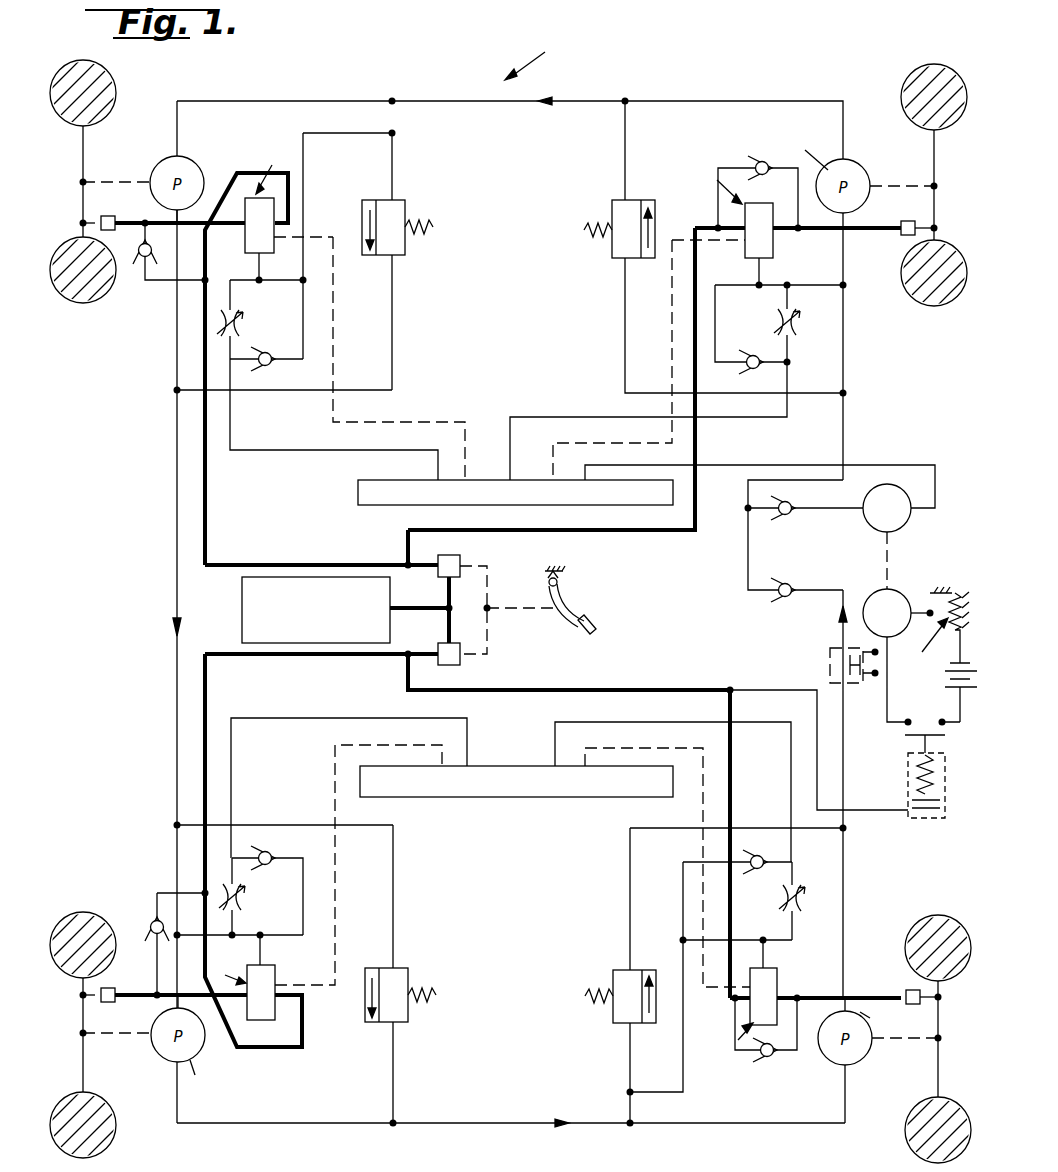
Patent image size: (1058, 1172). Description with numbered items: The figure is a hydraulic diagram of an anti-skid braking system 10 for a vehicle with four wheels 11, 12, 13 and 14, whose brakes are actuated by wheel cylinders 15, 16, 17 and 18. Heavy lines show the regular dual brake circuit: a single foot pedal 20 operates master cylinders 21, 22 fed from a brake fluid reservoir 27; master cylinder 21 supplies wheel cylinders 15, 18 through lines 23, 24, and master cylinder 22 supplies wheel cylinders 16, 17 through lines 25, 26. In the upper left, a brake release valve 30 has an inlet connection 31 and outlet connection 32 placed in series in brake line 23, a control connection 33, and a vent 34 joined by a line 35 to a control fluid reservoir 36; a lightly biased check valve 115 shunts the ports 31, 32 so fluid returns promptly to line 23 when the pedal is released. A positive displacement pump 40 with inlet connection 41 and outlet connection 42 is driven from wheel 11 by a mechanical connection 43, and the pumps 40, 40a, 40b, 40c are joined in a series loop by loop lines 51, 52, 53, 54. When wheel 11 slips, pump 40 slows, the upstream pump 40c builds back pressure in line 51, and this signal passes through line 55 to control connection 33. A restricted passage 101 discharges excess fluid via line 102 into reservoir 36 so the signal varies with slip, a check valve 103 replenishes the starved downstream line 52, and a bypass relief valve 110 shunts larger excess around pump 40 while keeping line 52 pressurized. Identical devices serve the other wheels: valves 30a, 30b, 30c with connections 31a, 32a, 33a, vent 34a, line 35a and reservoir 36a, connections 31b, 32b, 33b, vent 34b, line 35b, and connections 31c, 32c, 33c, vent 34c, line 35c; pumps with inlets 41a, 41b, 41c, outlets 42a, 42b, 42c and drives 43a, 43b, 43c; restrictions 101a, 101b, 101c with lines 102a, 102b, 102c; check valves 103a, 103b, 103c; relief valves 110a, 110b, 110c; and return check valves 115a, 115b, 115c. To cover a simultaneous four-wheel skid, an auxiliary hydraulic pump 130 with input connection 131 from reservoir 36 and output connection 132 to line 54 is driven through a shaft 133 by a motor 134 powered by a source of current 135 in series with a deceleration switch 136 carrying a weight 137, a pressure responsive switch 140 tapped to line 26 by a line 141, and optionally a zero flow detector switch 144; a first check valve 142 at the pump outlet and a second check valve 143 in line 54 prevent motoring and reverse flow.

The anti-skid braking system 10 is at (535, 58).
The wheel 11 is at (108, 85).
The wheel 12 is at (102, 915).
The wheel 13 is at (945, 915).
The wheel 14 is at (938, 66).
The wheel cylinder 15 is at (112, 217).
The wheel cylinder 16 is at (115, 988).
The wheel cylinder 17 is at (910, 990).
The wheel cylinder 18 is at (908, 221).
The foot pedal 20 is at (563, 583).
The master cylinder 21 is at (462, 562).
The master cylinder 22 is at (458, 668).
The brake line 23 is at (262, 567).
The brake line 24 is at (646, 530).
The brake line 25 is at (245, 656).
The brake line 26 is at (630, 690).
The brake fluid reservoir 27 is at (242, 615).
The brake release valve 30 is at (246, 355).
The inlet connection 31 is at (290, 236).
The outlet connection 32 is at (228, 236).
The control connection 33 is at (252, 270).
The vent 34 is at (262, 282).
The line 35 is at (333, 304).
The control fluid reservoir 36 is at (482, 480).
The pump 40 is at (186, 158).
The inlet connection 41 is at (172, 158).
The outlet connection 42 is at (165, 220).
The mechanical connection 43 is at (115, 181).
The loop line 51 is at (447, 106).
The loop line 52 is at (177, 572).
The loop line 53 is at (448, 1125).
The loop line 54 is at (843, 420).
The line 55 is at (338, 138).
The restricted passage 101 is at (238, 322).
The line 102 is at (272, 446).
The check valve 103 is at (271, 366).
The bypass relief valve 110 is at (405, 252).
The check valve 115 is at (140, 266).
The brake release valve 30a is at (251, 850).
The inlet connection 31a is at (302, 1012).
The outlet connection 32a is at (237, 1005).
The control connection 33a is at (262, 940).
The vent 34a is at (282, 976).
The line 35a is at (337, 895).
The control fluid reservoir 36a is at (500, 798).
The pump 40a is at (165, 1062).
The inlet connection 41a is at (163, 1018).
The outlet connection 42a is at (181, 1062).
The mechanical connection 43a is at (112, 1036).
The restricted passage 101a is at (240, 900).
The line 102a is at (340, 718).
The check valve 103a is at (267, 852).
The bypass relief valve 110a is at (410, 968).
The check valve 115a is at (157, 915).
The brake release valve 30b is at (738, 1040).
The inlet connection 31b is at (746, 1010).
The outlet connection 32b is at (812, 998).
The control connection 33b is at (767, 963).
The vent 34b is at (733, 998).
The line 35b is at (703, 845).
The pump 40b is at (832, 1055).
The inlet connection 41b is at (846, 1065).
The outlet connection 42b is at (850, 1012).
The mechanical connection 43b is at (903, 1040).
The restricted passage 101b is at (795, 892).
The line 102b is at (745, 722).
The check valve 103b is at (770, 858).
The bypass relief valve 110b is at (613, 1010).
The check valve 115b is at (762, 1060).
The brake release valve 30c is at (714, 182).
The inlet connection 31c is at (712, 226).
The outlet connection 32c is at (783, 229).
The control connection 33c is at (764, 278).
The vent 34c is at (740, 245).
The line 35c is at (672, 300).
The pump 40c is at (852, 160).
The inlet connection 41c is at (847, 222).
The outlet connection 42c is at (825, 165).
The mechanical connection 43c is at (898, 186).
The restricted passage 101c is at (780, 322).
The line 102c is at (598, 416).
The check valve 103c is at (745, 368).
The bypass relief valve 110c is at (612, 254).
The check valve 115c is at (760, 160).
The auxiliary hydraulic pump 130 is at (905, 526).
The input connection 131 is at (925, 465).
The output connection 132 is at (838, 520).
The shaft 133 is at (880, 568).
The motor 134 is at (866, 620).
The source of current 135 is at (948, 686).
The deceleration switch 136 is at (928, 597).
The weight 137 is at (920, 656).
The pressure responsive switch 140 is at (910, 768).
The line 141 is at (880, 812).
The first check valve 142 is at (748, 530).
The second check valve 143 is at (752, 592).
The zero flow detector switch 144 is at (830, 660).